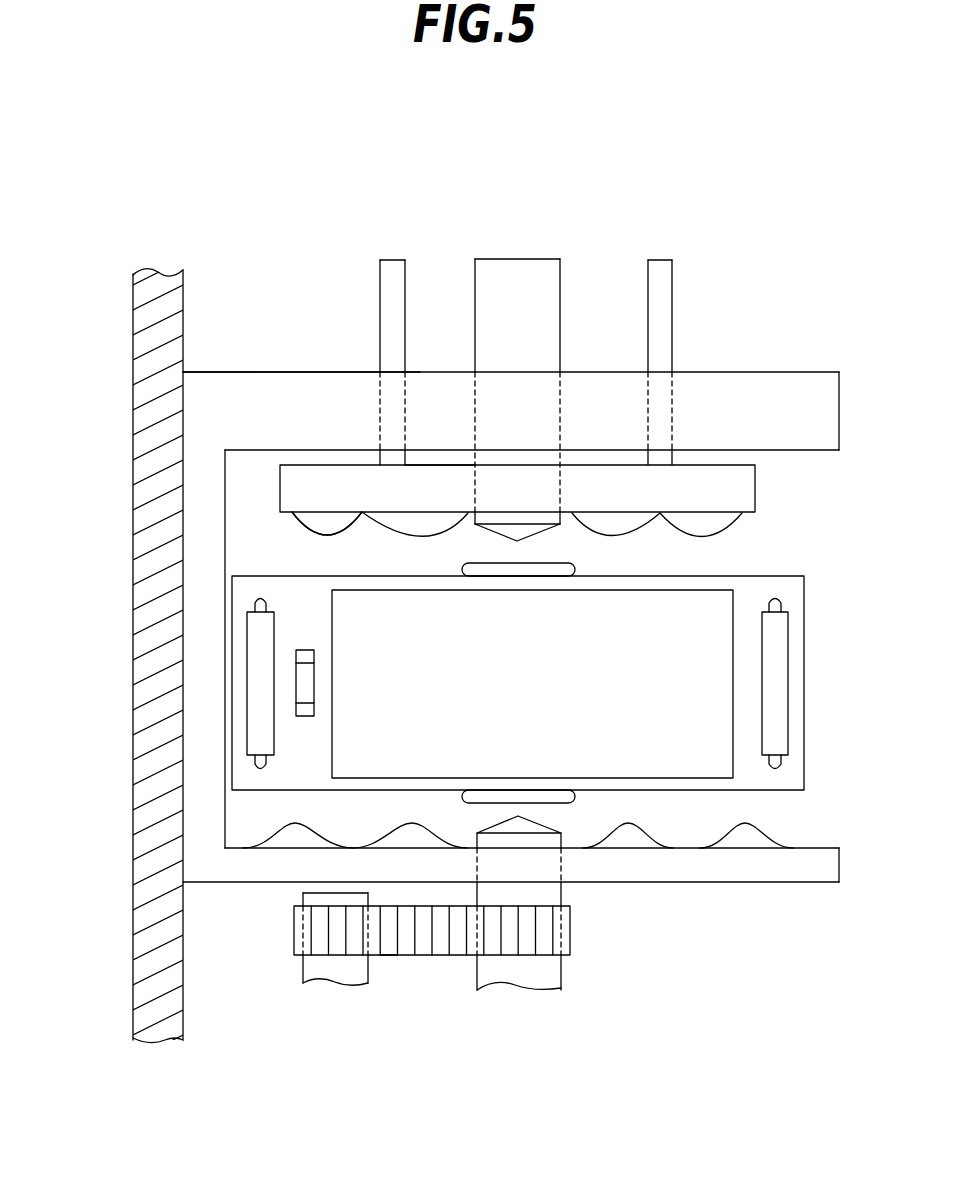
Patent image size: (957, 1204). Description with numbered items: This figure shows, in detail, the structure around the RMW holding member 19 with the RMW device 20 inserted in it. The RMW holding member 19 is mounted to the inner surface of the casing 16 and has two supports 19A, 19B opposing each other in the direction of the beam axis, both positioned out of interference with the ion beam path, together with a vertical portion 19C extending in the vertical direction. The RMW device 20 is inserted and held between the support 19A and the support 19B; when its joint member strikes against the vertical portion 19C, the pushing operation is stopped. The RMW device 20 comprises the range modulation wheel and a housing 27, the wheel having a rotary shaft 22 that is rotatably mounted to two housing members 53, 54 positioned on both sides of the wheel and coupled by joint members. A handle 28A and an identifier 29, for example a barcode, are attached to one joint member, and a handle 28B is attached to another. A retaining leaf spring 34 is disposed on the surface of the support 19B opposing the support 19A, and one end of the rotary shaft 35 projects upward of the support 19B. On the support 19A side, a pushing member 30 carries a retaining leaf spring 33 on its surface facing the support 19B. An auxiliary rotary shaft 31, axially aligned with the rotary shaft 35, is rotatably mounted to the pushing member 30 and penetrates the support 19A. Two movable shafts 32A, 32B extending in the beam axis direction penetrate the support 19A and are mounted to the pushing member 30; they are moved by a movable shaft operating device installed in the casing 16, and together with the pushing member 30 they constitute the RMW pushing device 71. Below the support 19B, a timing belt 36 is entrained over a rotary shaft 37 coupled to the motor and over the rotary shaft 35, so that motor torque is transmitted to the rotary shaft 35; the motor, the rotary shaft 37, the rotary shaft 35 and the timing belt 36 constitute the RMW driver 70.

The casing 16 is at (122, 660).
The RMW holding member 19 is at (511, 370).
The support 19A is at (301, 327).
The support 19B is at (511, 905).
The vertical portion 19C is at (226, 529).
The RMW device 20 is at (556, 683).
The rotary shaft 22 is at (553, 557).
The housing 27 is at (606, 684).
The handle 28A is at (334, 684).
The handle 28B is at (720, 684).
The identifier 29 is at (349, 683).
The pushing member 30 is at (559, 488).
The auxiliary rotary shaft 31 is at (517, 367).
The movable shaft 32A is at (395, 329).
The movable shaft 32B is at (690, 331).
The retaining leaf spring 33 is at (543, 538).
The retaining leaf spring 34 is at (518, 786).
The rotary shaft 35 is at (559, 903).
The timing belt 36 is at (432, 969).
The rotary shaft 37 is at (300, 941).
The housing member 53 is at (349, 543).
The housing member 54 is at (586, 810).
The RMW driver 70 is at (383, 993).
The RMW pushing device 71 is at (440, 376).